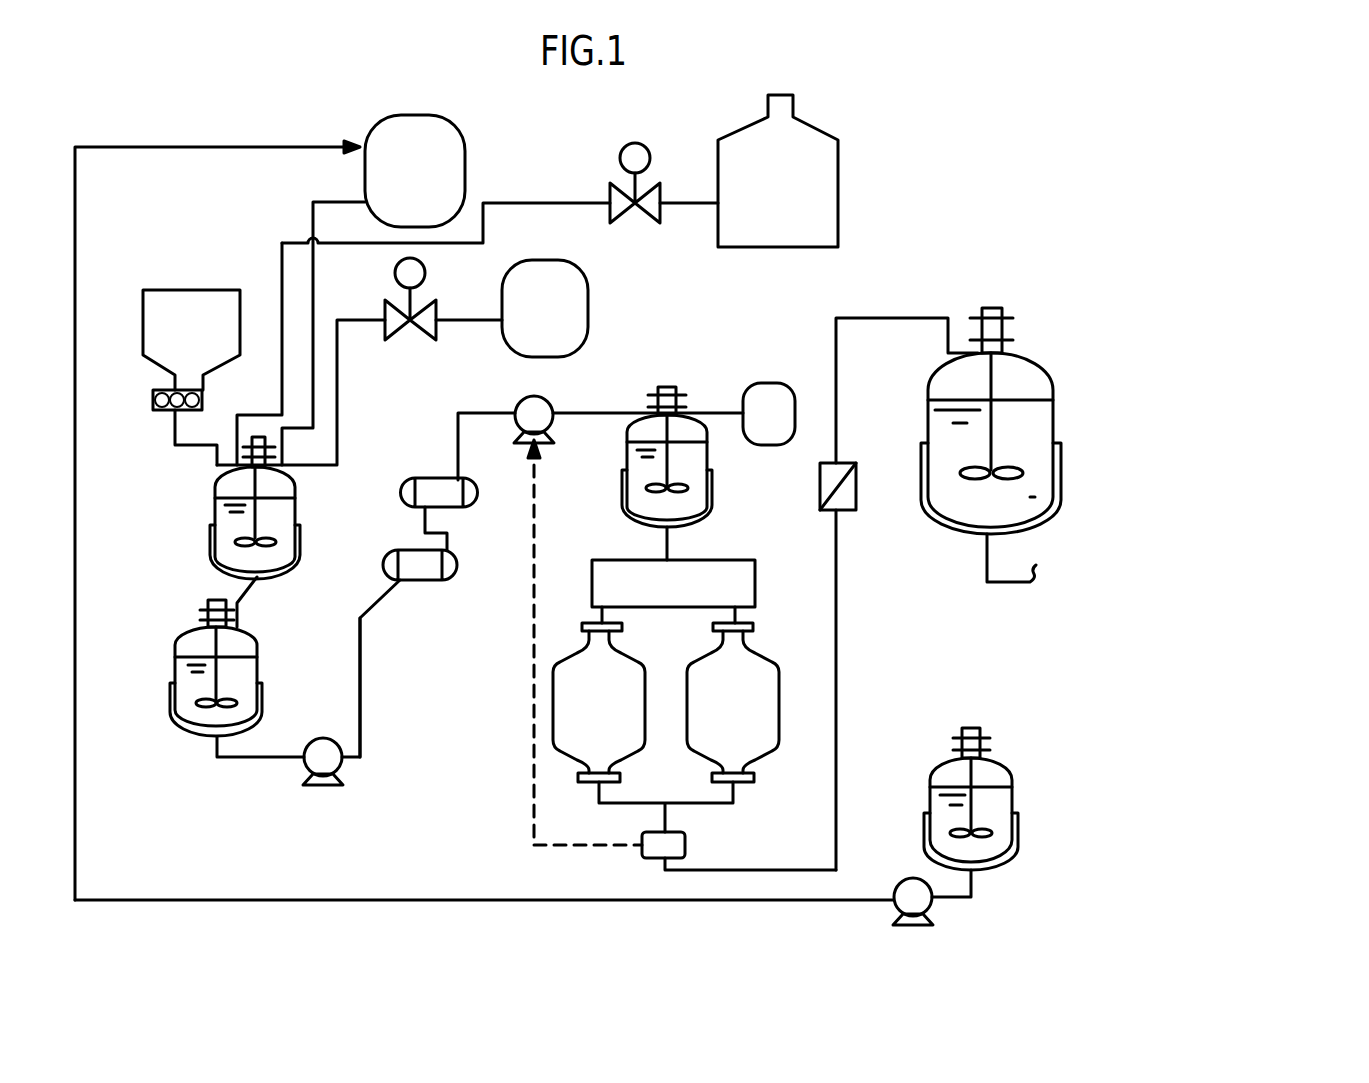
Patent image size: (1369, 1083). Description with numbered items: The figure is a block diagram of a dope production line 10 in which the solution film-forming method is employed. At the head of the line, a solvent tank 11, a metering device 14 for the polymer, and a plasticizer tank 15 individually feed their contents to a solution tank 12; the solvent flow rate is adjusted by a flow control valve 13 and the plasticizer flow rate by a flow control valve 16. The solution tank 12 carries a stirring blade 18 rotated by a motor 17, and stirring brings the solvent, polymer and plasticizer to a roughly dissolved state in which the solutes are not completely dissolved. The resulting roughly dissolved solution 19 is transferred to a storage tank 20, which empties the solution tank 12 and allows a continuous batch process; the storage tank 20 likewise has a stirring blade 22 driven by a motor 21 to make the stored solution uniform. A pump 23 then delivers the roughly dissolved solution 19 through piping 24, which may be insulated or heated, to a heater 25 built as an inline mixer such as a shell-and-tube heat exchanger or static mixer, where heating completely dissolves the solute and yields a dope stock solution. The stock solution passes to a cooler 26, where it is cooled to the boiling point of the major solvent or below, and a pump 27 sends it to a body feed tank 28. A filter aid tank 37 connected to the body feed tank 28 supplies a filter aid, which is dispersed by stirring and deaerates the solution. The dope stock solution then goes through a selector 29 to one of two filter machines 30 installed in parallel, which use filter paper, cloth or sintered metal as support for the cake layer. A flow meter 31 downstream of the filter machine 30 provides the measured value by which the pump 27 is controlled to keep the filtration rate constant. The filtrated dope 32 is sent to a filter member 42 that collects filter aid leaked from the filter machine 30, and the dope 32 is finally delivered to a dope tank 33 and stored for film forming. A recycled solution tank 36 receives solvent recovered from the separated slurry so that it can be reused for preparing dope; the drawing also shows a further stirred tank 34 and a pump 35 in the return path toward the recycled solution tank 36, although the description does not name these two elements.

The dope production line 10 is at (944, 216).
The solvent tank 11 is at (838, 175).
The solution tank 12 is at (244, 467).
The flow control valve 13 is at (660, 192).
The metering device 14 is at (189, 290).
The plasticizer tank 15 is at (588, 308).
The flow control valve 16 is at (400, 342).
The motor 17 is at (260, 435).
The stirring blade 18 is at (293, 500).
The roughly dissolved solution 19 is at (230, 555).
The storage tank 20 is at (178, 659).
The motor 21 is at (206, 618).
The stirring blade 22 is at (210, 690).
The pump 23 is at (325, 787).
The piping 24 is at (360, 696).
The heater 25 is at (408, 546).
The cooler 26 is at (441, 480).
The pump 27 is at (518, 400).
The body feed tank 28 is at (622, 452).
The selector 29 is at (757, 585).
The filter machine 30 is at (581, 656).
The flow meter 31 is at (685, 843).
The dope 32 is at (1030, 497).
The dope tank 33 is at (1053, 420).
The solvent recovery tank 34 is at (1012, 795).
The pump 35 is at (906, 880).
The recycled solution tank 36 is at (465, 148).
The filter aid tank 37 is at (769, 383).
The filter member 42 is at (856, 492).